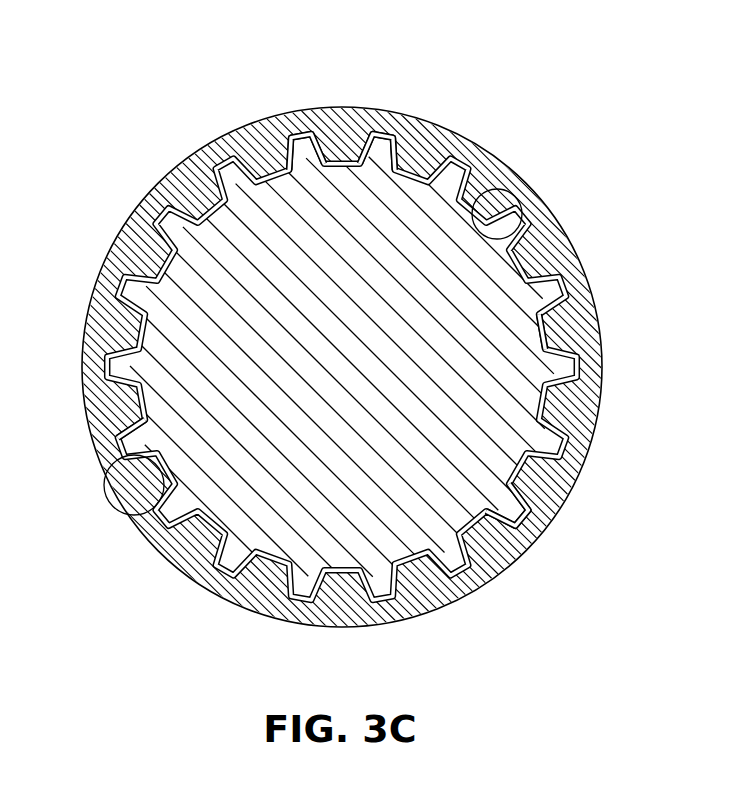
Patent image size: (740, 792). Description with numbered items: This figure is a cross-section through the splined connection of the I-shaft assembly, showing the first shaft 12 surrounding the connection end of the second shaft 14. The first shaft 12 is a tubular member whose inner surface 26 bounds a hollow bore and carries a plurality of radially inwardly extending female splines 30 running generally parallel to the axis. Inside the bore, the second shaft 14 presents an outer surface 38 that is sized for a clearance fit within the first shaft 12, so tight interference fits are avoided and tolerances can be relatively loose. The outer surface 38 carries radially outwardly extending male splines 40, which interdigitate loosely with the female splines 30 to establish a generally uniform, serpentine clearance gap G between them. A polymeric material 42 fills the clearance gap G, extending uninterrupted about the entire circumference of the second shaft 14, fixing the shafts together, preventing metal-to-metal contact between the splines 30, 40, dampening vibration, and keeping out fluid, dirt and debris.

The first shaft 12 is at (91, 235).
The second shaft 14 is at (326, 388).
The inner surface 26 is at (233, 163).
The outer surface 38 is at (298, 133).
The male splines 40 is at (373, 137).
The female splines 30 is at (518, 186).
The polymeric material 42 is at (553, 307).
The clearance gap G is at (142, 402).